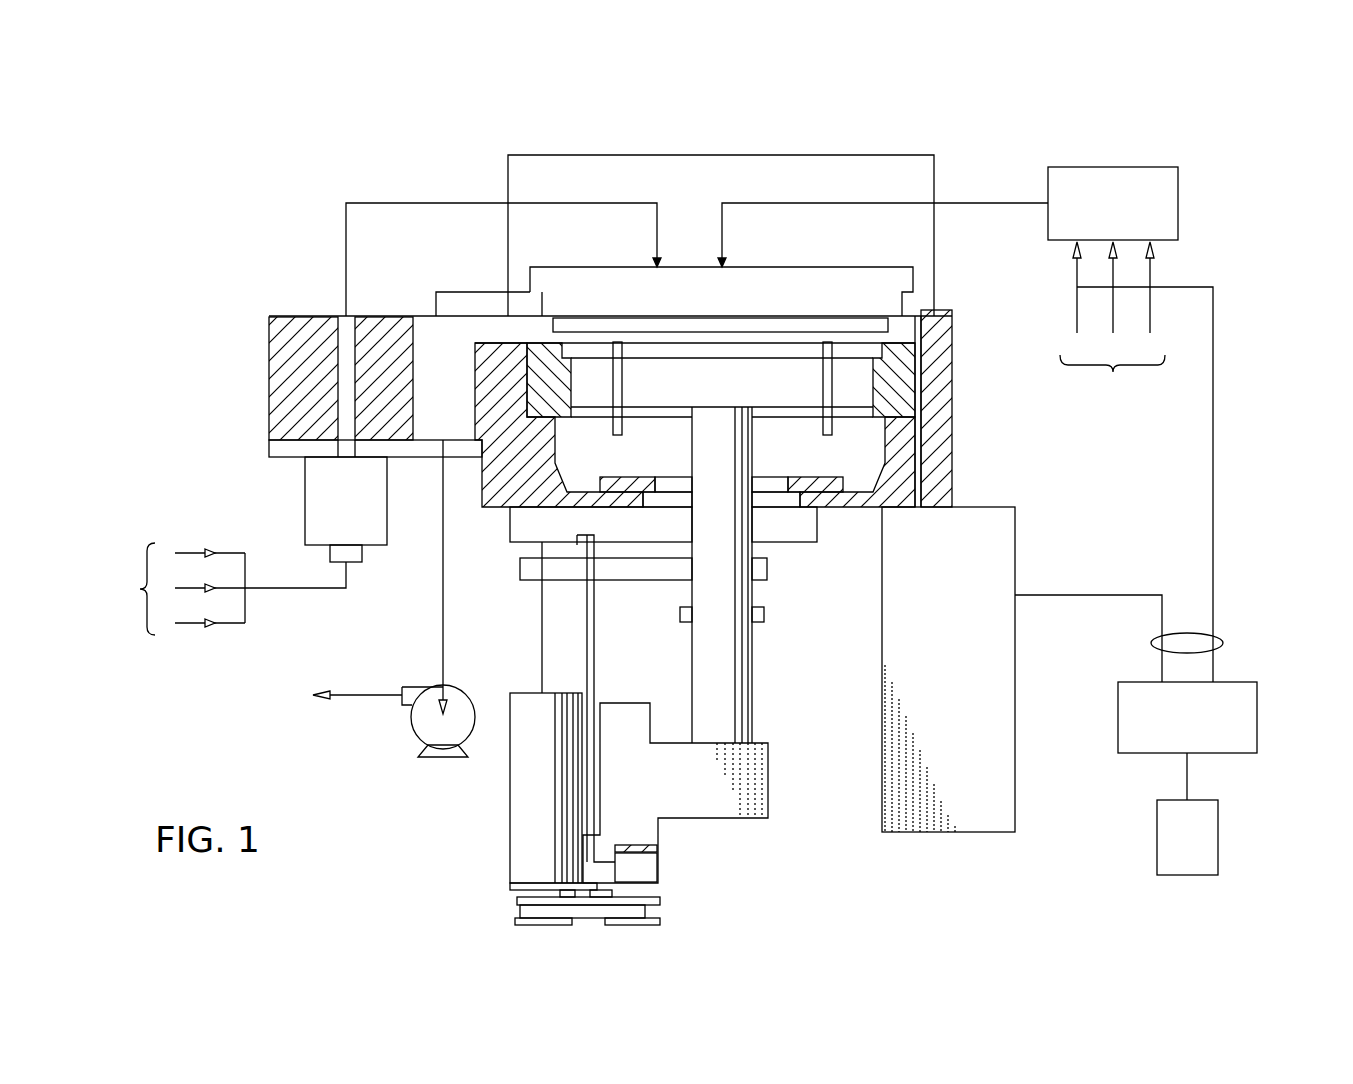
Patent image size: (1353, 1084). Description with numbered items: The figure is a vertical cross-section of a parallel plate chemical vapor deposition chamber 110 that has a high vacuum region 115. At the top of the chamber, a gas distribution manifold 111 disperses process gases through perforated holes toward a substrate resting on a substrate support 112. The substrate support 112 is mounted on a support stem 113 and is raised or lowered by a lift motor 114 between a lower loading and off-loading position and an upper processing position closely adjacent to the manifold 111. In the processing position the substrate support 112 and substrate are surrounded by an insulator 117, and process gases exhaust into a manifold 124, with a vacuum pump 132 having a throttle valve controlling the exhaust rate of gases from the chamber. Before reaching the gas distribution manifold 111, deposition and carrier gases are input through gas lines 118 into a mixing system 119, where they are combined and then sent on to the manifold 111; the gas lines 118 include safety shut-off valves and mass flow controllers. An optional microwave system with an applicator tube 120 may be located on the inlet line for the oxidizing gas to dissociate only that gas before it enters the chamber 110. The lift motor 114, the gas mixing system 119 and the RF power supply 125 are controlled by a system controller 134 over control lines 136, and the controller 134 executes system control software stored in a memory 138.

The chemical vapor deposition chamber 110 is at (1063, 133).
The gas distribution manifold 111 is at (875, 325).
The substrate support 112 is at (853, 393).
The support stem 113 is at (753, 683).
The lift motor 114 is at (510, 822).
The high vacuum region 115 is at (668, 452).
The insulator 117 is at (558, 405).
The gas lines 118 is at (651, 462).
The mixing system 119 is at (1178, 202).
The applicator tube 120 is at (305, 498).
The manifold 124 is at (425, 325).
The RF power supply 125 is at (1015, 718).
The vacuum pump 132 is at (430, 688).
The system controller 134 is at (1257, 717).
The control lines 136 is at (1223, 643).
The memory 138 is at (1218, 835).